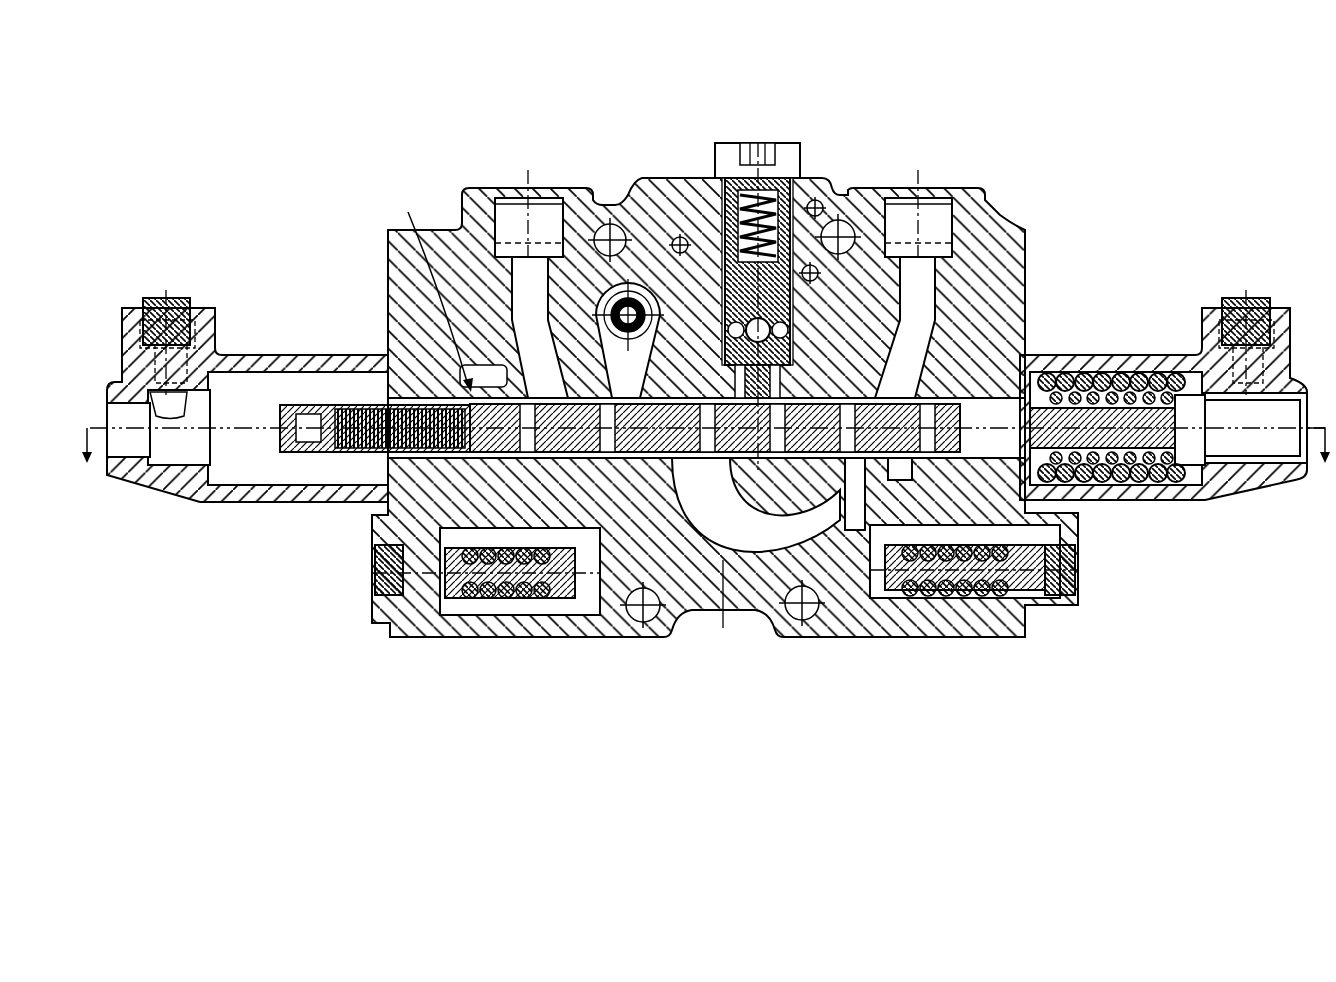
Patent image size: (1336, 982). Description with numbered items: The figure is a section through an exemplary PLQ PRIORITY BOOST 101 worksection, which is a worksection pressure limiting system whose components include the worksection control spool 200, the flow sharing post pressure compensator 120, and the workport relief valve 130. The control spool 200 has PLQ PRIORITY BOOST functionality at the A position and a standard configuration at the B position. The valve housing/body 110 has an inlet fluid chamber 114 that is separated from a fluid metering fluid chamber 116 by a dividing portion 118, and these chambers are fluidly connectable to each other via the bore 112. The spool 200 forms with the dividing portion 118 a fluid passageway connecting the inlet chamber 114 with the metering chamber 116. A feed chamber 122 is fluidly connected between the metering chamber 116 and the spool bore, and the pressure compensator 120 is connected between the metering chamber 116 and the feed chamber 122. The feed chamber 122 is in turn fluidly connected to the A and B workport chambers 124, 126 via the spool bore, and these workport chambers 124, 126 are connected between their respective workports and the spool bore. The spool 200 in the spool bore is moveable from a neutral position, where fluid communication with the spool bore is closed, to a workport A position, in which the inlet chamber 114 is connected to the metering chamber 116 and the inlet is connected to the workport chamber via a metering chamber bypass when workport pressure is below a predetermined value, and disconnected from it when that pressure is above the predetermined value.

The PLQ PRIORITY BOOST 101 is at (1150, 118).
The valve housing/body 110 is at (1003, 222).
The bore 112 is at (935, 580).
The inlet fluid chamber 114 is at (690, 515).
The fluid metering fluid chamber 116 is at (880, 555).
The dividing portion 118 is at (795, 555).
The flow sharing post pressure compensator 120 is at (798, 280).
The feed chamber 122 is at (578, 555).
The A workport chamber 124 is at (565, 390).
The B workport chamber 126 is at (905, 390).
The workport relief valve 130 is at (645, 290).
The worksection control spool 200 is at (1000, 400).